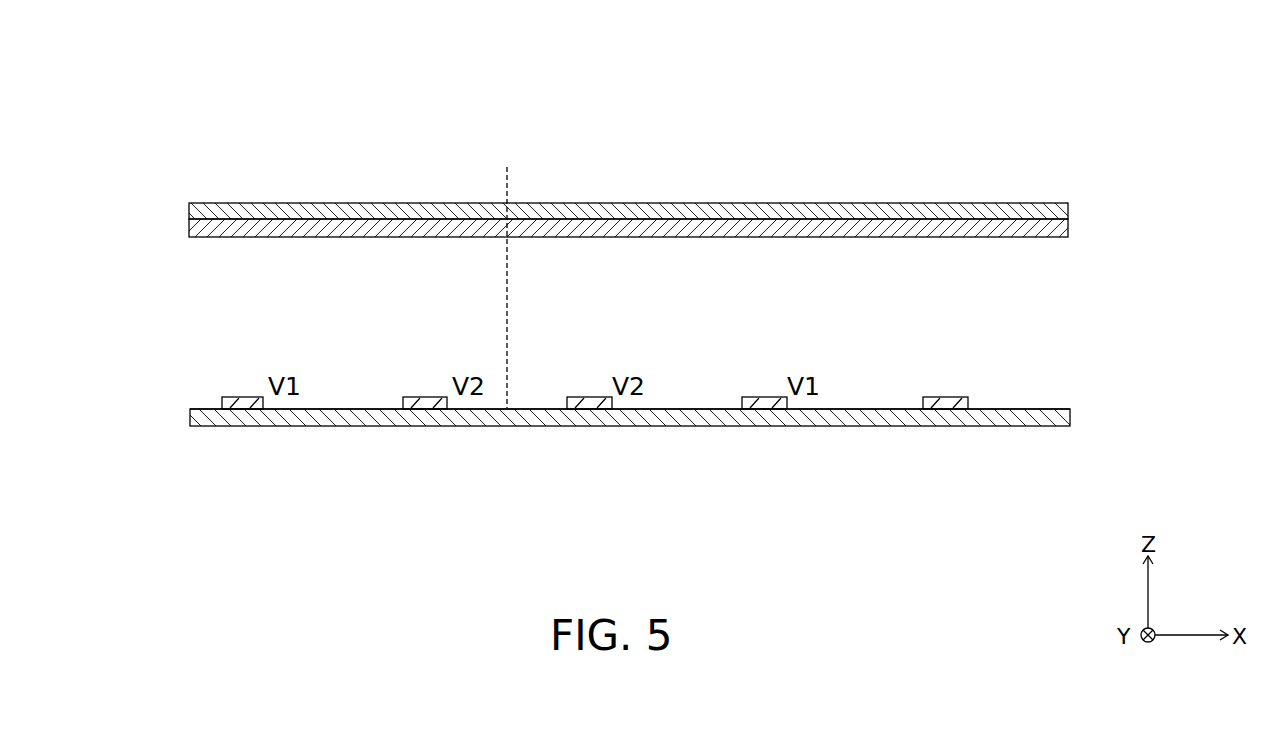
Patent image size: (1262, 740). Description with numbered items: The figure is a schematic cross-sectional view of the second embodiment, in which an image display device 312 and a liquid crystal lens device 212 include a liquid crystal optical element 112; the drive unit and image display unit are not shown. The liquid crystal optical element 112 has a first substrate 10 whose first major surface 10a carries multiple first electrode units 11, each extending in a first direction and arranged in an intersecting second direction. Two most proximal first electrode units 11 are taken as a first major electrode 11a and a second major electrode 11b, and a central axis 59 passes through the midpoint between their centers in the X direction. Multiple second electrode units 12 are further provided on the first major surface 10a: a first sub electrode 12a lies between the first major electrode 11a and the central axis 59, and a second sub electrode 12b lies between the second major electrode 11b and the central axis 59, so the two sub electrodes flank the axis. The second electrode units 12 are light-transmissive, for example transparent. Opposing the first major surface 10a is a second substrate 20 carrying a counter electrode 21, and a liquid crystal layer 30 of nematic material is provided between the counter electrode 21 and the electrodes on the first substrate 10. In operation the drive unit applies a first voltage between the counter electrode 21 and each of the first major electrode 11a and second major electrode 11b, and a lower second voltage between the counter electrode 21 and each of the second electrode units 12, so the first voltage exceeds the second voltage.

The first substrate 10 is at (1058, 420).
The first major surface 10a is at (1033, 409).
The first electrode units 11 is at (508, 445).
The first major electrode 11a is at (243, 409).
The second major electrode 11b is at (764, 409).
The second electrode units 12 is at (511, 445).
The first sub electrode 12a is at (425, 409).
The second sub electrode 12b is at (589, 409).
The second substrate 20 is at (1055, 213).
The counter electrode 21 is at (1054, 232).
The liquid crystal layer 30 is at (1080, 304).
The central axis 59 is at (506, 274).
The liquid crystal optical element 112 is at (1081, 145).
The liquid crystal lens device 212 is at (172, 184).
The image display device 312 is at (863, 100).